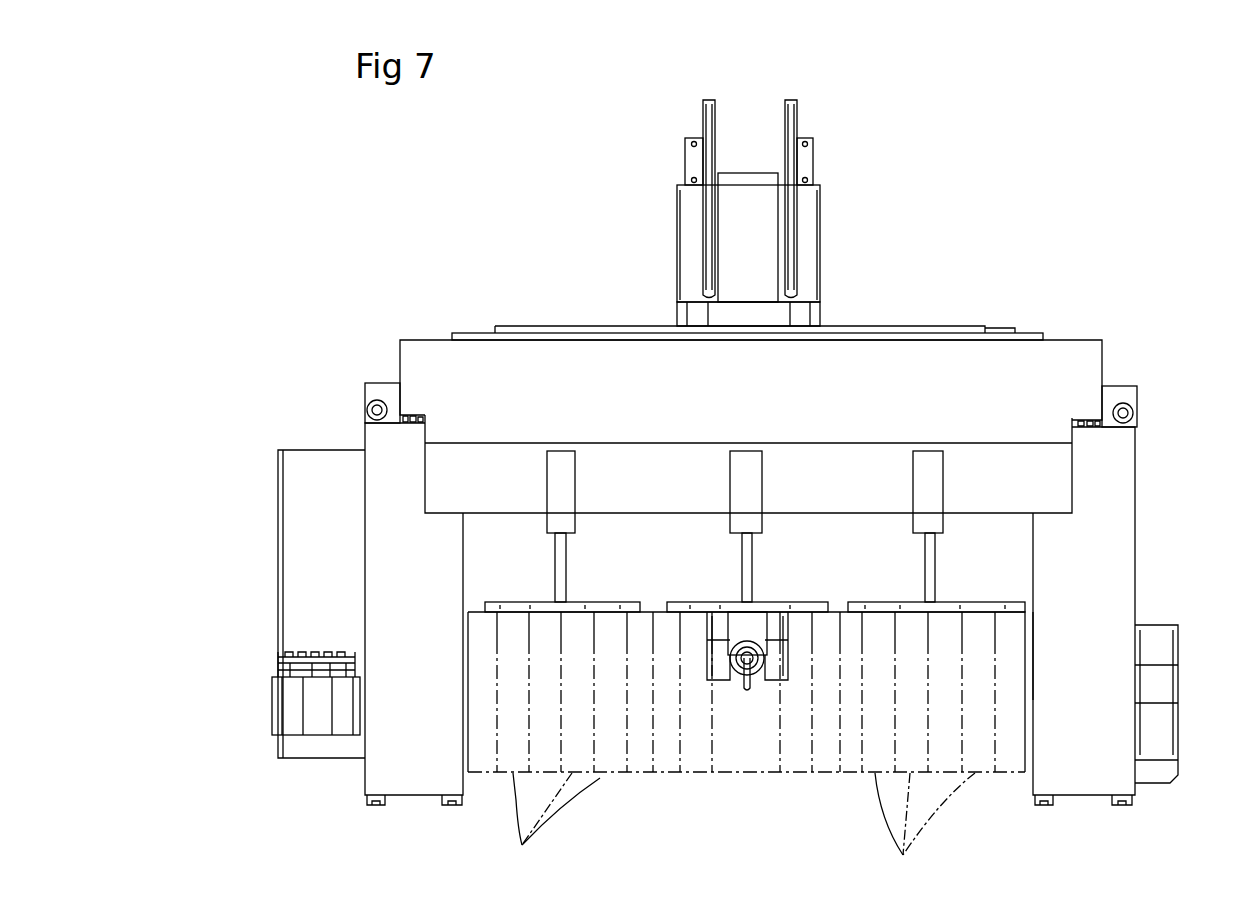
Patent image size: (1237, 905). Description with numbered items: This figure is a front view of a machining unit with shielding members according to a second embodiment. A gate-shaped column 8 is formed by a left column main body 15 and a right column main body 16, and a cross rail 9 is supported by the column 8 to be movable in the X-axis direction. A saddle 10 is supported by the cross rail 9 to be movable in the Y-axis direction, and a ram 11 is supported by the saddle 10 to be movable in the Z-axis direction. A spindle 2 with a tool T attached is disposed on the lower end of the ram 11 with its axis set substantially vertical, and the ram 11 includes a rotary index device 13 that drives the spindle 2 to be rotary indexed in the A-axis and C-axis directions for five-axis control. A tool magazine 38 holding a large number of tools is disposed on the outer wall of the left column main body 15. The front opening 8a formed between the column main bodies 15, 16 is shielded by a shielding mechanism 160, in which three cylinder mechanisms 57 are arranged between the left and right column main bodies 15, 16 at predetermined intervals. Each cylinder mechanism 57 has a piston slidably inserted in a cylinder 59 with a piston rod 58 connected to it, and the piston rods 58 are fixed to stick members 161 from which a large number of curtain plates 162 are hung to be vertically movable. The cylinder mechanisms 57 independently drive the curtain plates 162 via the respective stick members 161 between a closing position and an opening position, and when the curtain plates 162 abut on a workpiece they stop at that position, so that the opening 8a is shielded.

The spindle 2 is at (735, 690).
The tool T is at (752, 690).
The gate-shaped column 8 is at (1050, 310).
The front opening 8a is at (1033, 697).
The cross rail 9 is at (452, 333).
The saddle 10 is at (824, 316).
The ram 11 is at (747, 172).
The rotary index device 13 is at (820, 580).
The left column main body 15 is at (358, 496).
The right column main body 16 is at (1142, 482).
The tool magazine 38 is at (270, 642).
The cylinder mechanism 57 is at (580, 466).
The piston rod 58 is at (568, 558).
The cylinder 59 is at (545, 468).
The shielding mechanism 160 is at (643, 784).
The stick member 161 is at (514, 602).
The curtain plate 162 is at (734, 830).